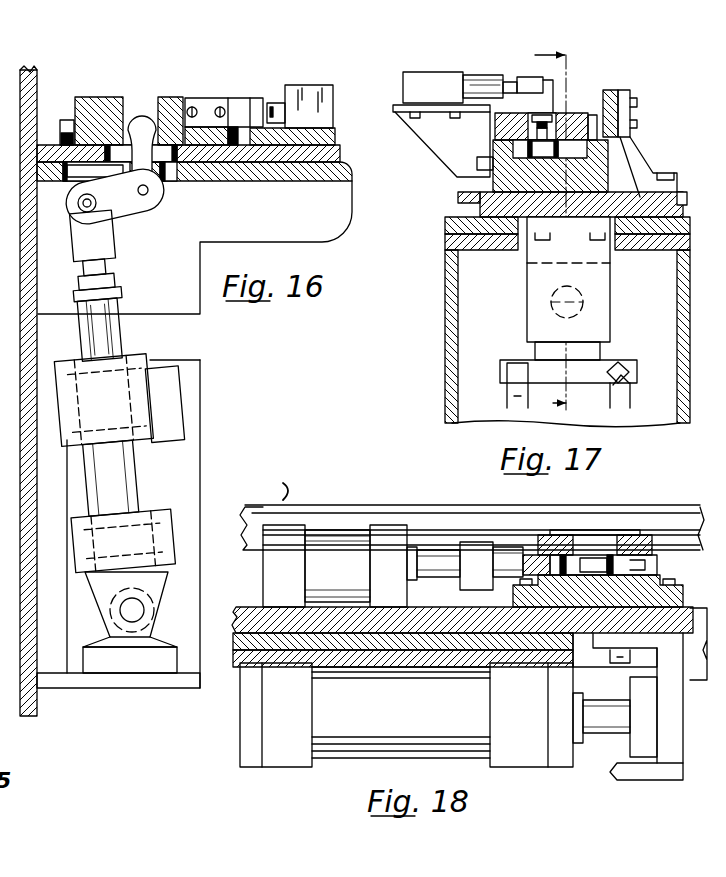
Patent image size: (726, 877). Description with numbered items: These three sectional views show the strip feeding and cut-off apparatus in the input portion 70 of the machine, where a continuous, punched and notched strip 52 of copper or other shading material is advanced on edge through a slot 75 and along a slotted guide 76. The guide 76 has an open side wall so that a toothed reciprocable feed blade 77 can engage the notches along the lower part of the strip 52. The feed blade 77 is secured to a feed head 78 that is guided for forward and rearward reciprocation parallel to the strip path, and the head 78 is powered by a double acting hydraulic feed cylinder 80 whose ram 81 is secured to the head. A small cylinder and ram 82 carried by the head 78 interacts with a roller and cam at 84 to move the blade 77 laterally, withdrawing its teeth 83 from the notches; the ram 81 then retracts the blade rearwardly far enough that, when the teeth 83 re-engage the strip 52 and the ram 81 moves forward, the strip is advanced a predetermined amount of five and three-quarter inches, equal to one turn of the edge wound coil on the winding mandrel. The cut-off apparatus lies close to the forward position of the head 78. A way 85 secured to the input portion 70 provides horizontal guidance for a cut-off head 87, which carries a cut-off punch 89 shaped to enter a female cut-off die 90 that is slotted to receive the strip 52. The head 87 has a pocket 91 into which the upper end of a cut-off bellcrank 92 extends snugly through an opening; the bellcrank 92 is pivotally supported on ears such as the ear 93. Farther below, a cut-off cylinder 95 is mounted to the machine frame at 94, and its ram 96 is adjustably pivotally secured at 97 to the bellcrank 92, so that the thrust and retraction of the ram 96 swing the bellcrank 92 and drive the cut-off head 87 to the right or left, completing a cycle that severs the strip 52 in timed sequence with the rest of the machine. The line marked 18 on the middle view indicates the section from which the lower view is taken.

In FIG. 17, the section line 18— 18 is at (535, 65).
In FIG. 16, the strip 52 is at (280, 108).
In FIG. 18, the input portion 70 is at (273, 491).
In FIG. 17, the slot 75 is at (630, 96).
In FIG. 18, the slot 75 is at (252, 533).
In FIG. 17, the slotted guide 76 is at (610, 92).
In FIG. 18, the slotted guide 76 is at (258, 512).
In FIG. 17, the feed blade 77 is at (575, 114).
In FIG. 18, the feed blade 77 is at (567, 534).
In FIG. 18, the feed head 78 is at (664, 578).
In FIG. 17, the hydraulic feed cylinder 80 is at (525, 300).
In FIG. 18, the hydraulic feed cylinder 80 is at (336, 755).
In FIG. 17, the ram 81 is at (585, 302).
In FIG. 18, the ram 81 is at (596, 708).
In FIG. 18, the small cylinder and ram 82 is at (325, 539).
In FIG. 17, the teeth 83 is at (592, 114).
In FIG. 17, the roller and cam 84 is at (527, 150).
In FIG. 18, the roller and cam 84 is at (596, 559).
In FIG. 16, the way 85 is at (66, 122).
In FIG. 16, the cut-off head 87 is at (108, 91).
In FIG. 16, the cut-off punch 89 is at (238, 104).
In FIG. 16, the female cut-off die 90 is at (272, 112).
In FIG. 16, the pocket 91 is at (136, 108).
In FIG. 16, the cut-off bellcrank 92 is at (160, 186).
In FIG. 16, the ear 93 is at (178, 181).
In FIG. 16, the frame mounting 94 is at (131, 613).
In FIG. 16, the cut-off cylinder 95 is at (160, 452).
In FIG. 16, the ram 96 is at (110, 336).
In FIG. 16, the pivot 97 is at (92, 210).